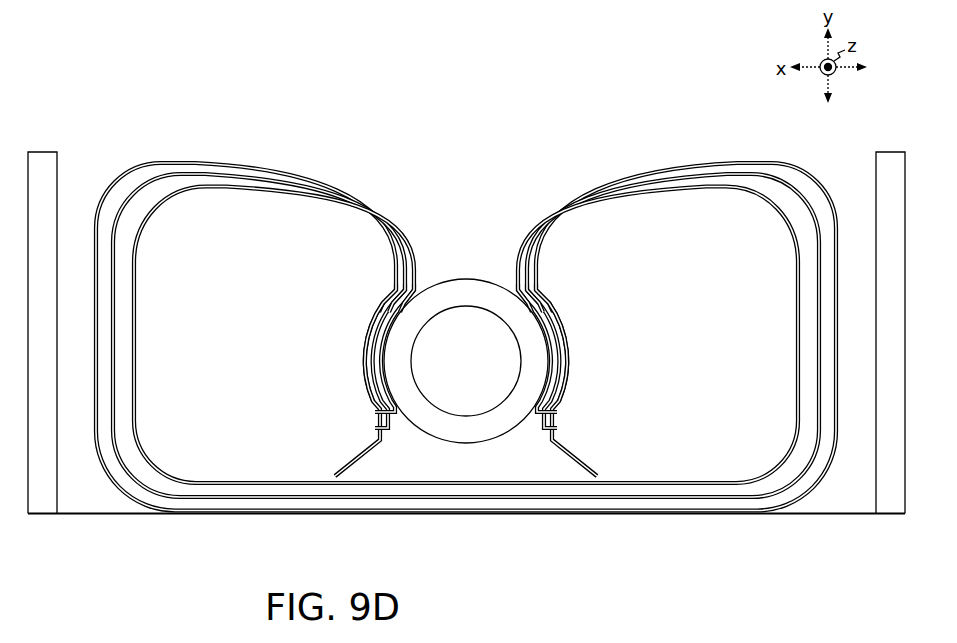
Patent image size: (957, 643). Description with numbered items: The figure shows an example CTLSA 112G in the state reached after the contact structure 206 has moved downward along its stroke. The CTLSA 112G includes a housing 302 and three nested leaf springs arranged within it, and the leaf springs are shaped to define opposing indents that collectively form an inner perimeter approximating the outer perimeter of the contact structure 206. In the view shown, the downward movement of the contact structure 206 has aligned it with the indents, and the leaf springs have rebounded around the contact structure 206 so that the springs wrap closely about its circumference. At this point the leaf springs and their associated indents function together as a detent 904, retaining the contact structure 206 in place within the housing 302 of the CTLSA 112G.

The CTLSA 112G is at (462, 290).
The housing 302 is at (140, 527).
The contact structure 206 is at (447, 388).
The detent 904 is at (345, 312).